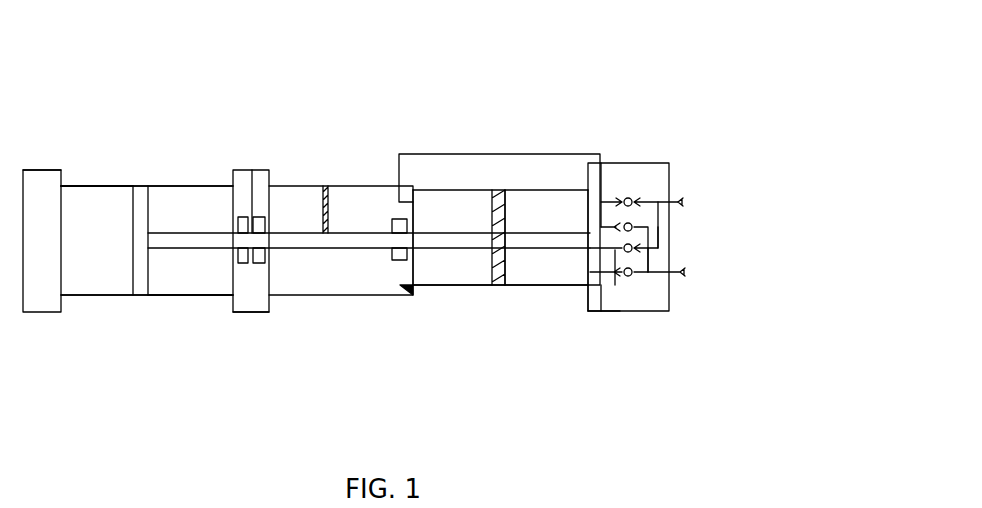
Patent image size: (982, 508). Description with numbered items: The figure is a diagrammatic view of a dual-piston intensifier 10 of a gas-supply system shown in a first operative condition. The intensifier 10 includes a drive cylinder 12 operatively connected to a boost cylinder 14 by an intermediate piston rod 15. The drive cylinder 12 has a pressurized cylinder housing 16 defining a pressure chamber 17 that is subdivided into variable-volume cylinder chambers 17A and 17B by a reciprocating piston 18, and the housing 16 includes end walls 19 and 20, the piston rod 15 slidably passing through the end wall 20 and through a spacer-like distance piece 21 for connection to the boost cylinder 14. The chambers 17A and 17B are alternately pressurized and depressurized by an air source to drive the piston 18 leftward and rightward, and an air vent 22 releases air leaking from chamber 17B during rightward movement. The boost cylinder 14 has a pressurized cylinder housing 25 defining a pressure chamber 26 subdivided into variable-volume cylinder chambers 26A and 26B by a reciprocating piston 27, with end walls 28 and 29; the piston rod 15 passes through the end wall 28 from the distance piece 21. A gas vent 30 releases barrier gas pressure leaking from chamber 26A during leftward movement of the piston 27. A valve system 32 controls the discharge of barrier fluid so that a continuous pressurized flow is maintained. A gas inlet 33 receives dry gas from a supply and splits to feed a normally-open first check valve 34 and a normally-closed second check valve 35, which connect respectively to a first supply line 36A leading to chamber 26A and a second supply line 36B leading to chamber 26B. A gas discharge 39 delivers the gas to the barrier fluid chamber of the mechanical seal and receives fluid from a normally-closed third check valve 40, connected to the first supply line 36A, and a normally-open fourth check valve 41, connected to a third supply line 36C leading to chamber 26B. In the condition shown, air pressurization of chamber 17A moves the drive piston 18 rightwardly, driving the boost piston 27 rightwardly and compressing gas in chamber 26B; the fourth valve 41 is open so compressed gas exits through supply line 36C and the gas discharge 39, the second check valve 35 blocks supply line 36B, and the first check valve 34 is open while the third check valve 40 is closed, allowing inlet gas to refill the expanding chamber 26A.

The intensifier 10 is at (721, 79).
The drive cylinder 12 is at (152, 320).
The boost cylinder 14 is at (509, 300).
The intermediate piston rod 15 is at (305, 248).
The pressurized cylinder housing 16 is at (110, 186).
The pressure chamber 17 is at (83, 190).
The variable-volume cylinder chamber 17A is at (83, 297).
The variable-volume cylinder chamber 17B is at (207, 297).
The reciprocating piston 18 is at (142, 186).
The end wall 19 is at (43, 303).
The end wall 20 is at (252, 303).
The distance piece 21 is at (337, 295).
The air vent 22 is at (243, 185).
The pressurized cylinder housing 25 is at (592, 283).
The pressure chamber 26 is at (433, 290).
The variable-volume cylinder chamber 26A is at (448, 288).
The variable-volume cylinder chamber 26B is at (563, 290).
The reciprocating piston 27 is at (500, 190).
The end wall 28 is at (400, 293).
The end wall 29 is at (598, 283).
The gas vent 30 is at (327, 190).
The valve system 32 is at (651, 133).
The gas inlet 33 is at (684, 203).
The normally-open first check valve 34 is at (631, 197).
The normally-closed second check valve 35 is at (660, 238).
The first supply line 36A is at (478, 153).
The second supply line 36B is at (605, 283).
The third supply line 36C is at (616, 255).
The gas discharge 39 is at (682, 270).
The normally-closed third check valve 40 is at (640, 240).
The normally-open fourth check valve 41 is at (650, 275).